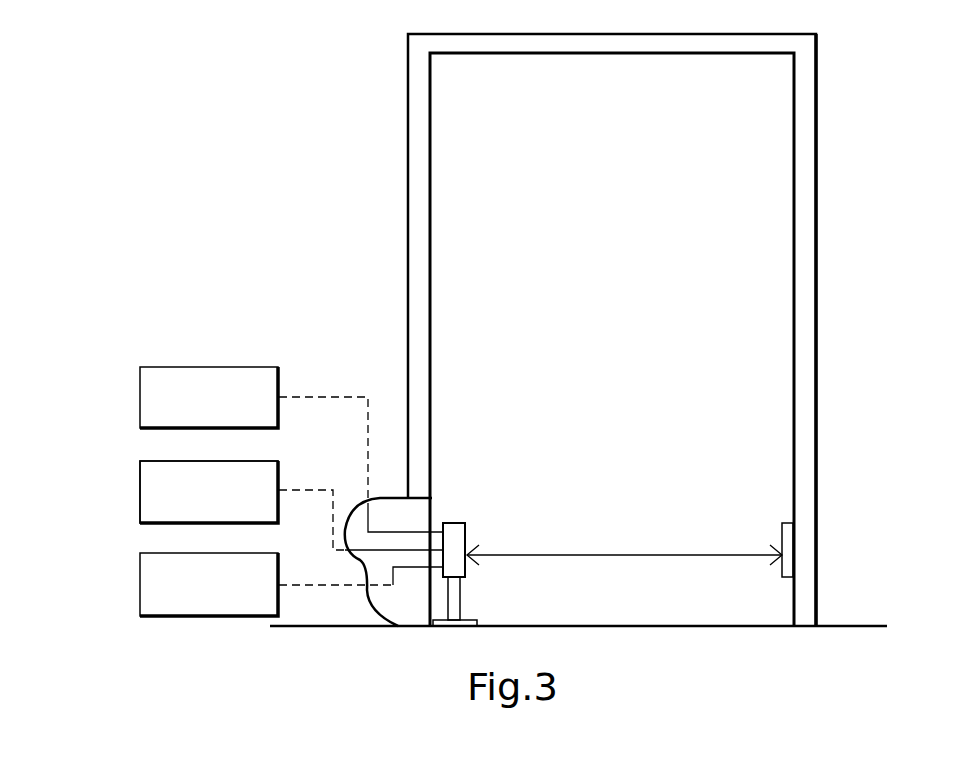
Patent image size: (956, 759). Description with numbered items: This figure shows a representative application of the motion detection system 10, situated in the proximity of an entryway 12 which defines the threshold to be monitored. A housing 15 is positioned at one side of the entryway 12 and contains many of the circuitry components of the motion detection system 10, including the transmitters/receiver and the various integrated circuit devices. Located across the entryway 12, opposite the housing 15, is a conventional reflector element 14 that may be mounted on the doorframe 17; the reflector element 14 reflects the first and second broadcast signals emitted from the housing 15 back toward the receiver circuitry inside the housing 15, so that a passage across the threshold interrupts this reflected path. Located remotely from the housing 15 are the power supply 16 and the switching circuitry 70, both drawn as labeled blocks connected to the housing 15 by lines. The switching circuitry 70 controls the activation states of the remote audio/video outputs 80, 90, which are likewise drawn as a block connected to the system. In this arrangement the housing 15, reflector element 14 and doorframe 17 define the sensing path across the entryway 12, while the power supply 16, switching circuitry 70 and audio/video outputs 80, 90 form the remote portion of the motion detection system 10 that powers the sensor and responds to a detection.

The motion detection system 10 is at (310, 191).
The entryway 12 is at (597, 231).
The reflector element 14 is at (787, 535).
The housing 15 is at (458, 538).
The power supply 16 is at (225, 367).
The doorframe 17 is at (803, 411).
The switching circuitry 70 is at (203, 616).
The audio/video output 80 is at (140, 505).
The audio/video output 90 is at (209, 492).